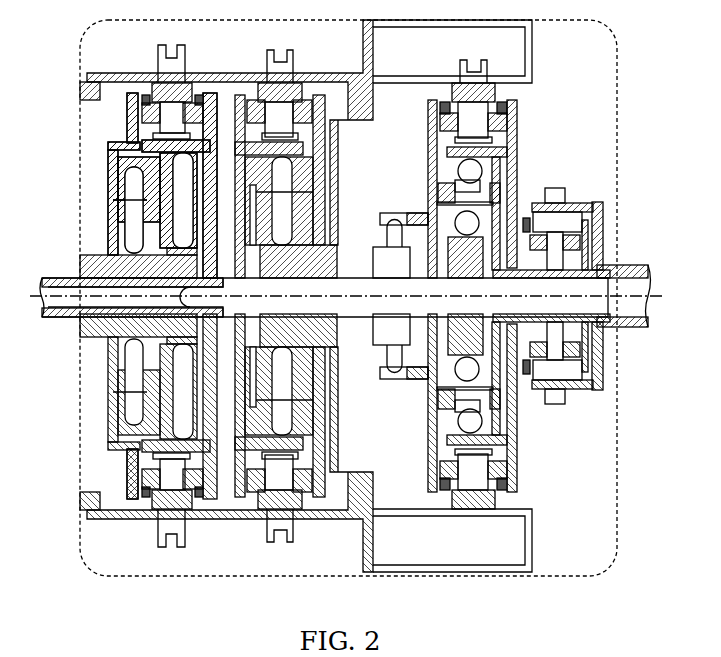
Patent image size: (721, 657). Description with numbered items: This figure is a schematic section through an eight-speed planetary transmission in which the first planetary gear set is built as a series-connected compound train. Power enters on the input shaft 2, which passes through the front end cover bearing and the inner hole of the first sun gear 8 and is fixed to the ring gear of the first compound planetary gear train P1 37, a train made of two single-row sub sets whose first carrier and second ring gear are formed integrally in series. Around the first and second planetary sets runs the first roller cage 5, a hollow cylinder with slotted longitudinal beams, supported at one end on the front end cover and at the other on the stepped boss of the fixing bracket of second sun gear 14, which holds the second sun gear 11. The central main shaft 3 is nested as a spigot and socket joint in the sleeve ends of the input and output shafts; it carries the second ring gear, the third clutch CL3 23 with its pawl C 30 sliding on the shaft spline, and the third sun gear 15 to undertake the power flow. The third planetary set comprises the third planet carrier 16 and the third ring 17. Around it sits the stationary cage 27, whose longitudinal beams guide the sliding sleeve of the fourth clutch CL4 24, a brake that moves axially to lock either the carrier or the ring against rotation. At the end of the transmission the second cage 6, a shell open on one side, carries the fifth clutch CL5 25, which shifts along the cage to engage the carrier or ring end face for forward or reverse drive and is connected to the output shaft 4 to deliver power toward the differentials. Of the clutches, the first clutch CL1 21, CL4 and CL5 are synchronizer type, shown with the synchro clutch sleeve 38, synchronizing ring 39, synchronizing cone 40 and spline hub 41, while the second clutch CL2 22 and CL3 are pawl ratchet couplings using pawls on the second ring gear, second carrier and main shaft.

The input shaft 2 is at (131, 286).
The central main shaft 3 is at (394, 297).
The output shaft 4 is at (624, 286).
The first roller cage 5 is at (301, 526).
The second cage 6 is at (551, 228).
The first sun gear 8 is at (138, 263).
The second sun gear 11 is at (298, 261).
The fixing bracket of second sun gear 14 is at (226, 132).
The third sun gear 15 is at (465, 334).
The third planet carrier 16 is at (418, 189).
The third ring 17 is at (521, 184).
The first clutch CL1 21 is at (180, 519).
The second clutch CL2 22 is at (291, 63).
The third clutch CL3 23 is at (390, 346).
The fourth clutch CL4 24 is at (461, 71).
The fifth clutch CL5 25 is at (551, 370).
The stationary cage 27 is at (452, 540).
The pawl C 30 is at (400, 245).
The first compound planetary gear train P1 37 is at (151, 185).
The synchro clutch sleeve 38 is at (163, 73).
The synchronizing ring 39 is at (197, 100).
The synchronizing cone 40 is at (127, 470).
The spline hub 41 is at (470, 457).